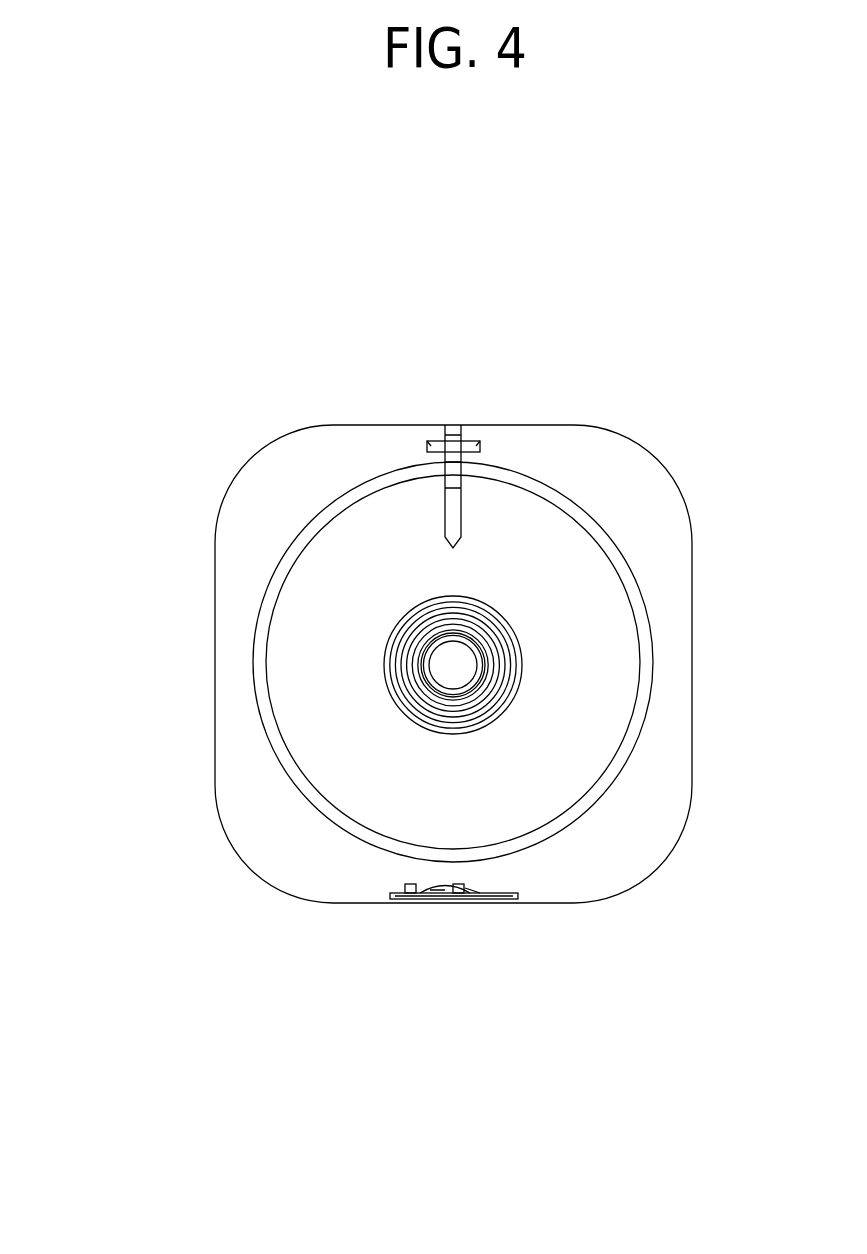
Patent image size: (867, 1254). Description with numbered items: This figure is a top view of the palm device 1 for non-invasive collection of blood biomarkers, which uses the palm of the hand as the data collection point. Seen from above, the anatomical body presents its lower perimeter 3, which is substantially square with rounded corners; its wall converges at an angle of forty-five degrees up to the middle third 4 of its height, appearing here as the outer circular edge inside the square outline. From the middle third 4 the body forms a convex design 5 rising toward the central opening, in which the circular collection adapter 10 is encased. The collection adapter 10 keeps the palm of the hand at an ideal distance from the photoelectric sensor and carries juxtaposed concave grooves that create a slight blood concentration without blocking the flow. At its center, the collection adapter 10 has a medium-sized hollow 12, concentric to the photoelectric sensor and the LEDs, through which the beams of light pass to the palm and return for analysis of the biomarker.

The device 1 is at (410, 762).
The lower perimeter 3 is at (215, 725).
The middle third 4 is at (613, 778).
The convex design 5 is at (590, 662).
The collection adapter 10 is at (405, 610).
The medium-sized hollow 12 is at (478, 636).